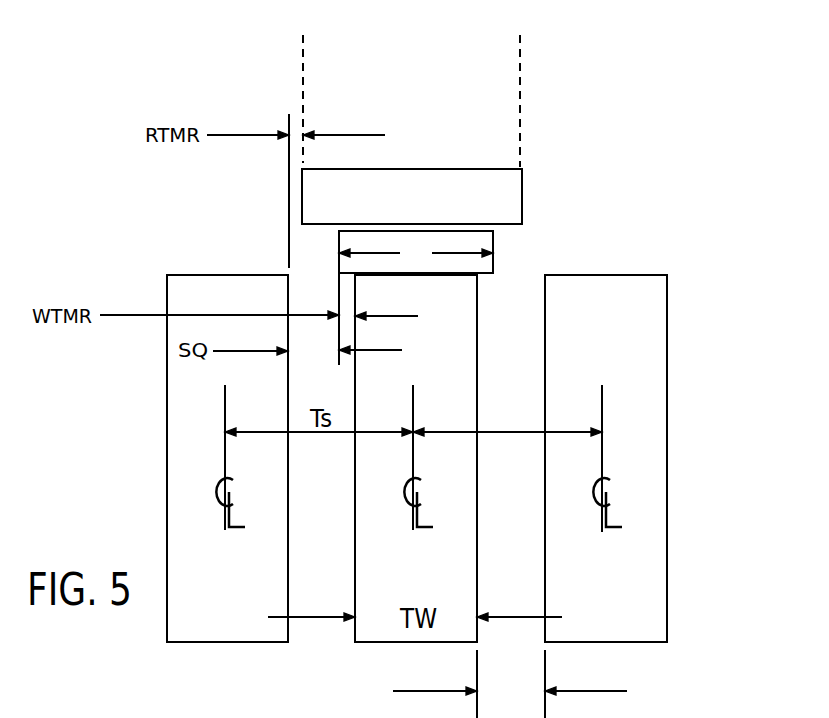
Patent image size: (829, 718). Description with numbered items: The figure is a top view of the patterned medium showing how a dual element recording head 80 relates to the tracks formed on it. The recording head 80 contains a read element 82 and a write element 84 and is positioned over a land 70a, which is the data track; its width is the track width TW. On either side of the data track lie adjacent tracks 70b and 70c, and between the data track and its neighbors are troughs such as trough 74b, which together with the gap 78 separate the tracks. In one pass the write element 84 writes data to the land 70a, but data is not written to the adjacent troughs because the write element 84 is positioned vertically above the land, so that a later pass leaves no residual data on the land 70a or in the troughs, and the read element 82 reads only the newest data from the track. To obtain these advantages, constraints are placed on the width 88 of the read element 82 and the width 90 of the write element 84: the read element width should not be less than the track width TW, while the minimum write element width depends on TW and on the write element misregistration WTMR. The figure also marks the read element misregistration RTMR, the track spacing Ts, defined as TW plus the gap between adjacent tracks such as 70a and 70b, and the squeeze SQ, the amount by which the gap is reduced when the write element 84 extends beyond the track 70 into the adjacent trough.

The track 70 is at (419, 496).
The land (data track) 70a is at (385, 630).
The adjacent track 70b is at (652, 546).
The adjacent track 70c is at (235, 630).
The trough 74b is at (469, 684).
The gap 78 is at (629, 699).
The recording head 80 is at (555, 170).
The read element 82 is at (456, 182).
The write element 84 is at (484, 274).
The width of read element 88 is at (520, 53).
The width of write element 90 is at (468, 255).